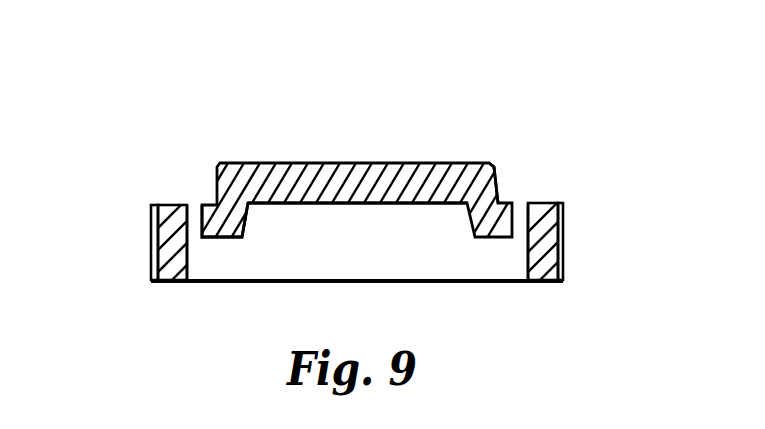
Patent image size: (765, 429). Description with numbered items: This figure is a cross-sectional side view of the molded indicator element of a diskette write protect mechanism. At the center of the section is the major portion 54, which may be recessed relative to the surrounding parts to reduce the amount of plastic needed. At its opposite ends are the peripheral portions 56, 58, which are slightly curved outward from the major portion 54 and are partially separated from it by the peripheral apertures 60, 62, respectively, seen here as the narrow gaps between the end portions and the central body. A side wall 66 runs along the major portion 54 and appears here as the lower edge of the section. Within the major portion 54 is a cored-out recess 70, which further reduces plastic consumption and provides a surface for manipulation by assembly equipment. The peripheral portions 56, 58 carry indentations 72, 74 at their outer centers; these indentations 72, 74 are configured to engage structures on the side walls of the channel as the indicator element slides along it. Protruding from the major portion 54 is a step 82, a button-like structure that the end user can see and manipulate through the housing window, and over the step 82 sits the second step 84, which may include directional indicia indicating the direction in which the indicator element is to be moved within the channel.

The major portion 54 is at (223, 238).
The peripheral portion 56 is at (546, 206).
The peripheral portion 58 is at (170, 205).
The peripheral aperture 60 is at (527, 203).
The peripheral aperture 62 is at (189, 212).
The side wall 66 is at (315, 268).
The cored-out recess 70 is at (413, 204).
The indentation 72 is at (563, 222).
The indentation 74 is at (150, 218).
The step 82 is at (500, 168).
The second step 84 is at (432, 162).